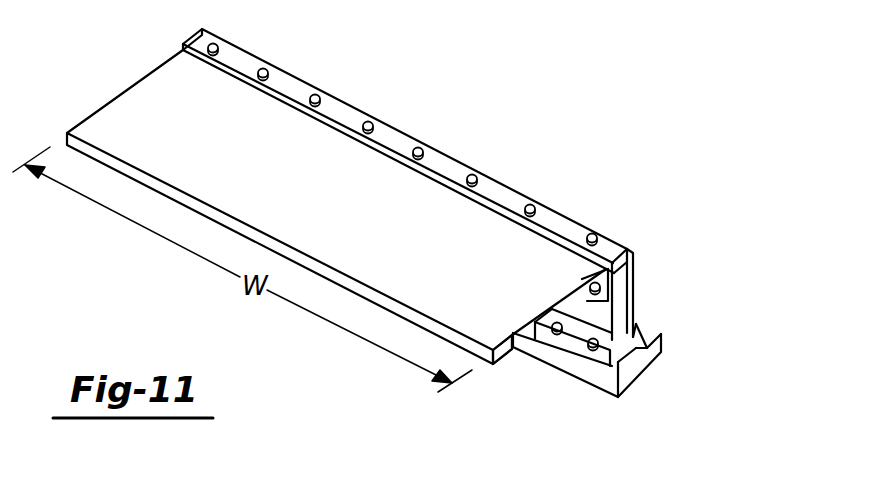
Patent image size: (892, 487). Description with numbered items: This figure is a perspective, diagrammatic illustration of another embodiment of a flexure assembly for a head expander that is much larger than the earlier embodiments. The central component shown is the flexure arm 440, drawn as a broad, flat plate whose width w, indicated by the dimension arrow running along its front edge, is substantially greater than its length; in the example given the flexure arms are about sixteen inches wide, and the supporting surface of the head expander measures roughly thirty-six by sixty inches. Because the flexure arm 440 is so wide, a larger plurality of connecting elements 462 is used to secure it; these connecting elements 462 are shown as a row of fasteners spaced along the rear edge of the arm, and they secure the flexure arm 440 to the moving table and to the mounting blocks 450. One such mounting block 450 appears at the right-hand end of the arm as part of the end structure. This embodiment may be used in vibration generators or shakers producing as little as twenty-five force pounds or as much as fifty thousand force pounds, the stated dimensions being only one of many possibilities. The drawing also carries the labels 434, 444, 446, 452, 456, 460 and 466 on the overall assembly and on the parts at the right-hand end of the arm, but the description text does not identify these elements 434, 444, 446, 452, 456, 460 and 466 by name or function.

The shelf assembly 434 is at (555, 173).
The flexure arm 440 is at (272, 165).
The end bracket 444 is at (636, 298).
The clamp block 446 is at (602, 318).
The mounting block 450 is at (650, 365).
The notch 452 is at (648, 330).
The post 456 is at (637, 272).
The rail 460 is at (404, 145).
The connecting element 462 is at (321, 95).
The plate end 466 is at (497, 366).